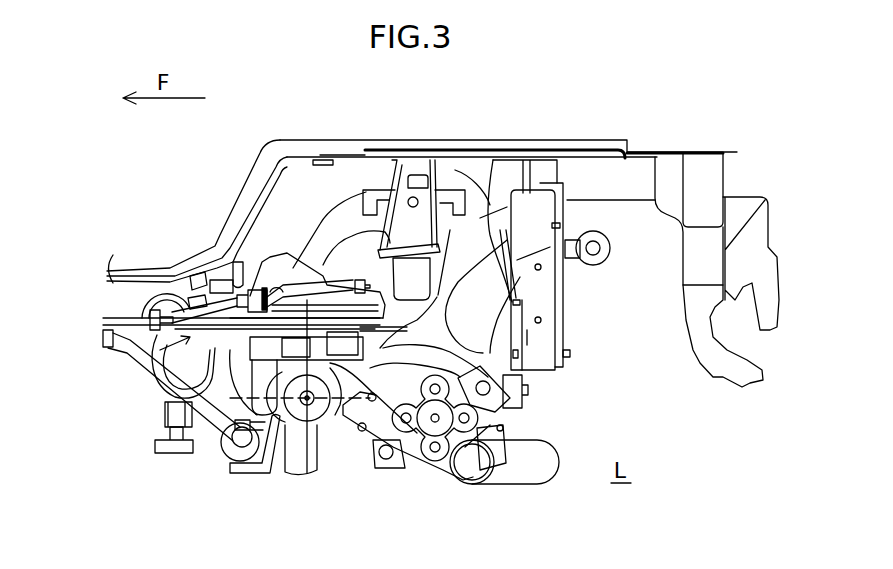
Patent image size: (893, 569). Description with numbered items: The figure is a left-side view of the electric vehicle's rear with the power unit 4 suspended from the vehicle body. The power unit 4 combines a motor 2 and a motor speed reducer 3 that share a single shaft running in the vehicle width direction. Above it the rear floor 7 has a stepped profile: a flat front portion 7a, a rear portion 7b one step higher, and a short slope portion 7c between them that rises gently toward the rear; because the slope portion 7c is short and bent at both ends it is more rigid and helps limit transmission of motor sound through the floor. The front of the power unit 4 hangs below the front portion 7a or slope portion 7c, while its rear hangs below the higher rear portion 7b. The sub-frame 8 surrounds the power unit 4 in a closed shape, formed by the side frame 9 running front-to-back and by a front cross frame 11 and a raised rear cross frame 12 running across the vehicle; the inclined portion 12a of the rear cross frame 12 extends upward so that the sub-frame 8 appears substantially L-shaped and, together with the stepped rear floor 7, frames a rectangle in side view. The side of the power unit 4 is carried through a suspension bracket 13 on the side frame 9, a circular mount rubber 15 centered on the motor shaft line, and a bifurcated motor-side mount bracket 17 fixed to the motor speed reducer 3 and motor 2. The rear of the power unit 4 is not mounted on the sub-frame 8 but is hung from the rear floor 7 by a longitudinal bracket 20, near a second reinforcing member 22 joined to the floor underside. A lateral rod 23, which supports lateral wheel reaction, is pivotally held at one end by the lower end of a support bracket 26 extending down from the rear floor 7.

The motor 2 is at (513, 387).
The motor speed reducer 3 is at (345, 450).
The power unit 4 is at (442, 310).
The rear floor 7 is at (586, 139).
The front portion 7a is at (125, 267).
The rear portion 7b is at (470, 140).
The slope portion 7c is at (253, 187).
The sub-frame 8 is at (177, 345).
The side frame 9 is at (220, 330).
The front cross frame 11 is at (161, 305).
The rear cross frame 12 is at (447, 245).
The inclined portion 12a is at (345, 215).
The suspension bracket 13 is at (307, 345).
The mount rubber 15 is at (300, 413).
The motor-side mount bracket 17 is at (410, 447).
The longitudinal bracket 20 is at (492, 286).
The second reinforcing member 22 is at (633, 187).
The lateral rod 23 is at (503, 403).
The support bracket 26 is at (540, 342).